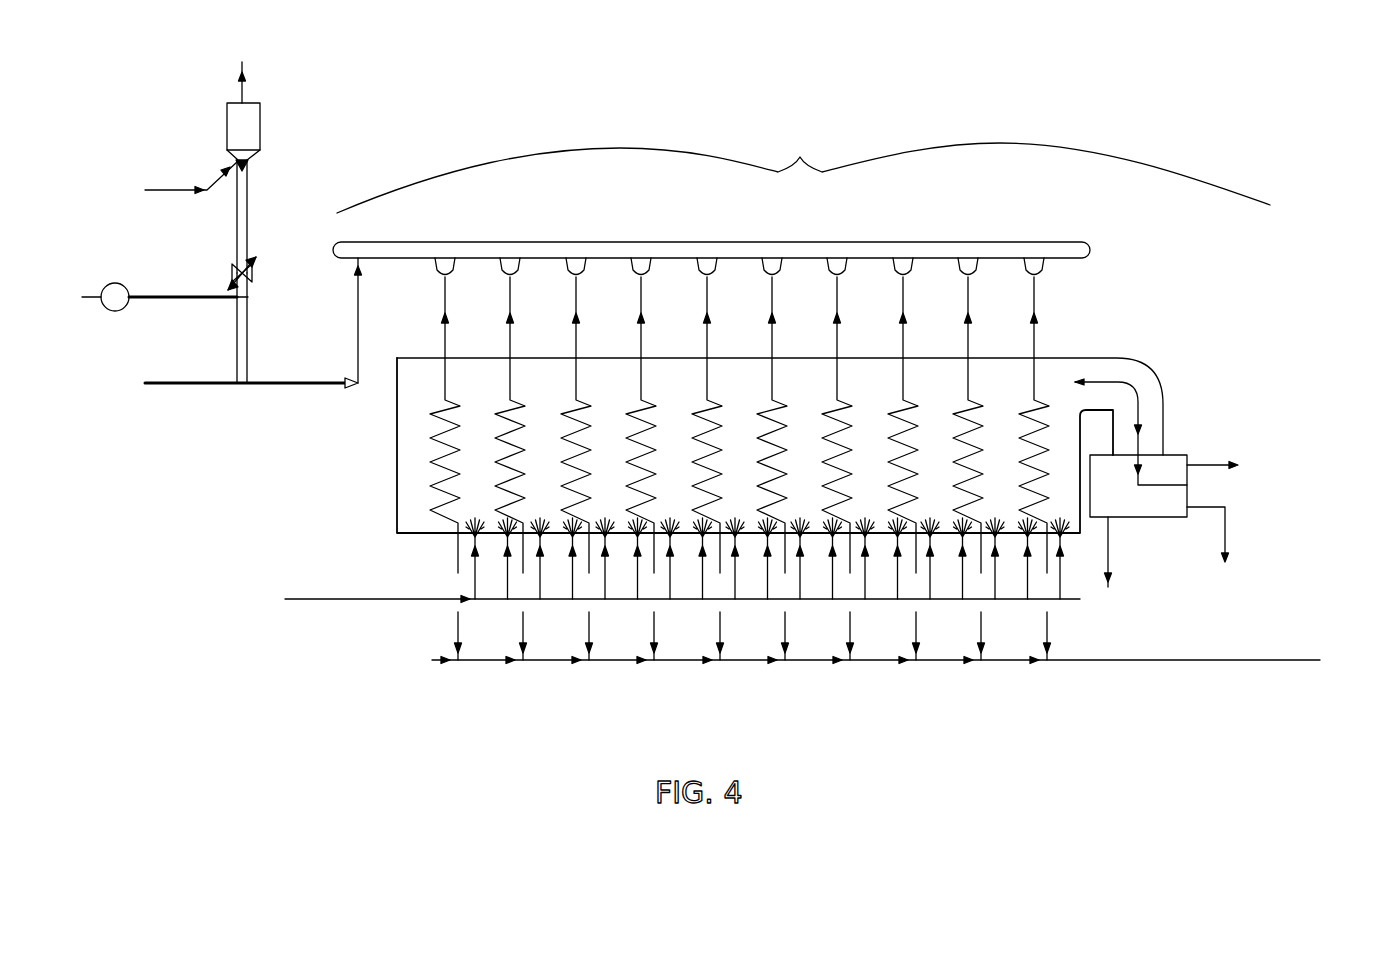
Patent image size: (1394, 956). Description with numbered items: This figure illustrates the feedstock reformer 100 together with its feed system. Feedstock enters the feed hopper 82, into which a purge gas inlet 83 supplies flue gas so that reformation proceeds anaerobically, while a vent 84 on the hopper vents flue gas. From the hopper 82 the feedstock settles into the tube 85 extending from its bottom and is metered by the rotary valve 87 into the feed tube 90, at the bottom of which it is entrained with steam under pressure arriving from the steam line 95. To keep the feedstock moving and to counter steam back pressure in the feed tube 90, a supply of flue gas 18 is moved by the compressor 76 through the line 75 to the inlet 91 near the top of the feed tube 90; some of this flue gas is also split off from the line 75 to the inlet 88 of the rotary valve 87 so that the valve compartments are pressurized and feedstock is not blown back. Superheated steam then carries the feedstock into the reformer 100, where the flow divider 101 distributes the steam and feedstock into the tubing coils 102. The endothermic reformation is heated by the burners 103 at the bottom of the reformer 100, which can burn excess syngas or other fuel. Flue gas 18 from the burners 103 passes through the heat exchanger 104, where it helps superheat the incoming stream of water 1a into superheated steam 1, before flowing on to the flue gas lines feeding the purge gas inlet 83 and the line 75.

The superheated steam 1 is at (1227, 512).
The incoming stream of water 1a is at (1110, 548).
The flue gas 18 is at (1135, 393).
The line 75 is at (158, 296).
The compressor 76 is at (111, 282).
The feed hopper 82 is at (248, 100).
The purge gas inlet 83 is at (157, 190).
The vent 84 is at (240, 90).
The tube 85 is at (249, 232).
The rotary valve 87 is at (234, 268).
The inlet 88 is at (228, 287).
The feed tube 90 is at (249, 328).
The inlet 91 is at (237, 298).
The steam line 95 is at (162, 382).
The feedstock reformer 100 is at (803, 169).
The flow divider 101 is at (735, 241).
The tubing coils 102 is at (500, 438).
The burners 103 is at (507, 540).
The heat exchanger 104 is at (1148, 518).